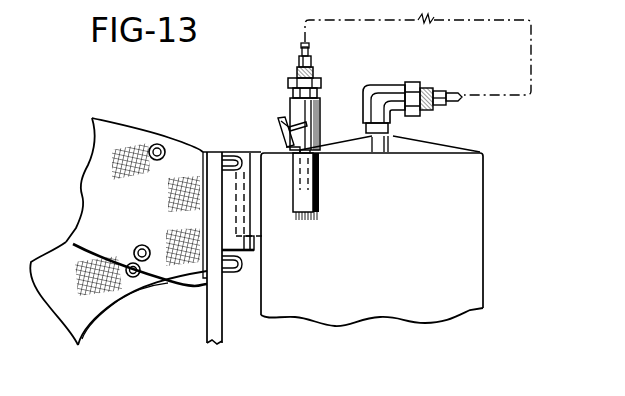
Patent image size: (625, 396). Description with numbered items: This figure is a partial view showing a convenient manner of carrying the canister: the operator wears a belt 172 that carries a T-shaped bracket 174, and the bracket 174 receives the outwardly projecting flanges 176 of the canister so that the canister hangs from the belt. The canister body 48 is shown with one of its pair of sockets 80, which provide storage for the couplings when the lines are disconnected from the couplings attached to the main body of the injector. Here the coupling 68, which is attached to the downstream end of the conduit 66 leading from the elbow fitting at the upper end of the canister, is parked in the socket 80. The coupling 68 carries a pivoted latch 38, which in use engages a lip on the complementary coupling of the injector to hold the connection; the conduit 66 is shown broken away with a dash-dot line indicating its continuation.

The pivoted latch 38 is at (279, 122).
The housing panel 48 is at (474, 200).
The conduit 66 is at (534, 58).
The coupling 68 is at (291, 111).
The socket 80 is at (311, 200).
The belt 172 is at (82, 188).
The T-shaped bracket 174 is at (243, 256).
The outwardly projecting flanges 176 is at (264, 237).